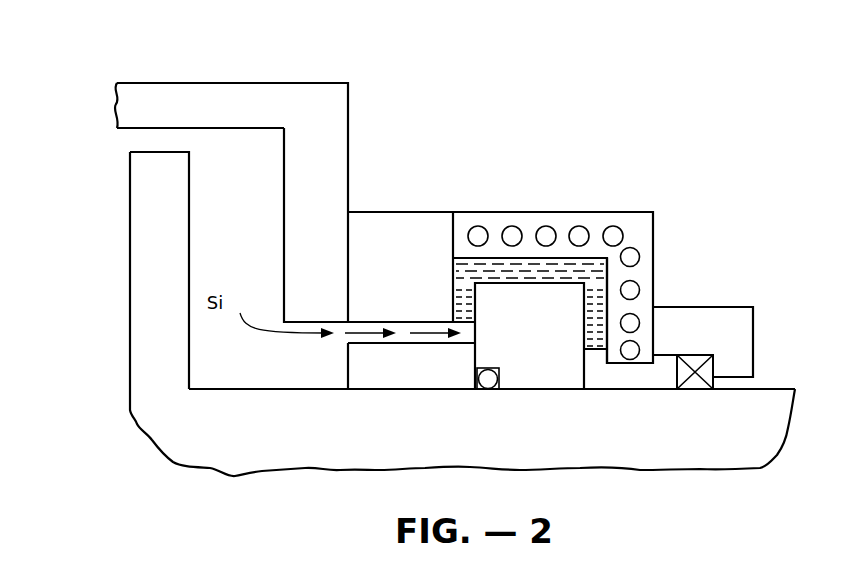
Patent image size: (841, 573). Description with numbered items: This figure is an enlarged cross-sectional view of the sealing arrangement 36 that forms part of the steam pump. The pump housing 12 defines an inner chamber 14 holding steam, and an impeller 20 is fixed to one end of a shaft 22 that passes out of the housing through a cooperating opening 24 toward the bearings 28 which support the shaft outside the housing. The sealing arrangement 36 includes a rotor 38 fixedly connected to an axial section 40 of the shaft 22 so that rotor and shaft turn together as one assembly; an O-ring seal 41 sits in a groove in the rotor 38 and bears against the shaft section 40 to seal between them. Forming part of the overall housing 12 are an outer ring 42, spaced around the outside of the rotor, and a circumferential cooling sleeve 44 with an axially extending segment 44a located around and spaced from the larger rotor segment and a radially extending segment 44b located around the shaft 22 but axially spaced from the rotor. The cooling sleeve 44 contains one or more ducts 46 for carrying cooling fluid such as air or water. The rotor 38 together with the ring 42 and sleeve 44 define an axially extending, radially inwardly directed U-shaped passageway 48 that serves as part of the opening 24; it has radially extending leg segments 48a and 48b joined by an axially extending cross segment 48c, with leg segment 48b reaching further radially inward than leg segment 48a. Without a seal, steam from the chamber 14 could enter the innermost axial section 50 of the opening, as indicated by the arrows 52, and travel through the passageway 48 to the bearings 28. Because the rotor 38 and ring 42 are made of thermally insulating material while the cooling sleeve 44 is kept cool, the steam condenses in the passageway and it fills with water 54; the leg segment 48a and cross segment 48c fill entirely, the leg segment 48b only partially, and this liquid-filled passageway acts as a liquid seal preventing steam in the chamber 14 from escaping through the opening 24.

The pump housing 12 is at (283, 92).
The inner chamber 14 is at (275, 157).
The impeller 20 is at (130, 190).
The shaft 22 is at (247, 397).
The opening 24 is at (326, 356).
The bearings 28 is at (700, 383).
The sealing arrangement 36 is at (570, 130).
The rotor 38 is at (553, 378).
The axial section of shaft 40 is at (440, 462).
The O-ring seal 41 is at (495, 384).
The outer ring 42 is at (418, 212).
The circumferential cooling sleeve 44 is at (553, 204).
The axially extending segment of cooling sleeve 44a is at (485, 226).
The radially extending segment of cooling sleeve 44b is at (610, 275).
The ducts 46 is at (632, 258).
The U-shaped passageway 48 is at (581, 260).
The leg segment 48a is at (455, 292).
The leg segment 48b is at (598, 314).
The cross segment 48c is at (522, 258).
The innermost axial section of passageway 50 is at (392, 342).
The arrows 52 is at (410, 330).
The water 54 is at (645, 272).